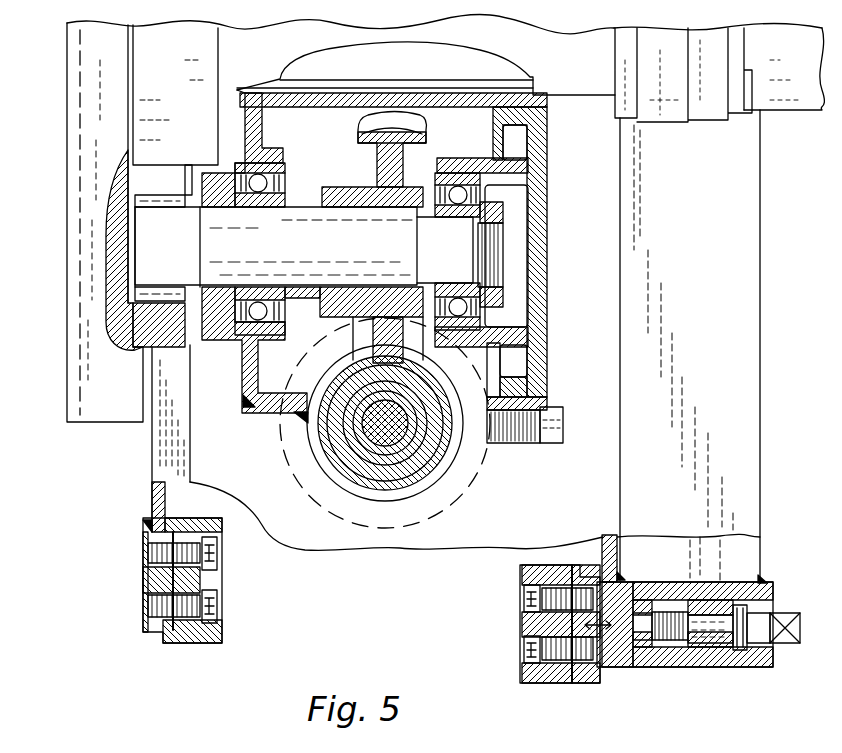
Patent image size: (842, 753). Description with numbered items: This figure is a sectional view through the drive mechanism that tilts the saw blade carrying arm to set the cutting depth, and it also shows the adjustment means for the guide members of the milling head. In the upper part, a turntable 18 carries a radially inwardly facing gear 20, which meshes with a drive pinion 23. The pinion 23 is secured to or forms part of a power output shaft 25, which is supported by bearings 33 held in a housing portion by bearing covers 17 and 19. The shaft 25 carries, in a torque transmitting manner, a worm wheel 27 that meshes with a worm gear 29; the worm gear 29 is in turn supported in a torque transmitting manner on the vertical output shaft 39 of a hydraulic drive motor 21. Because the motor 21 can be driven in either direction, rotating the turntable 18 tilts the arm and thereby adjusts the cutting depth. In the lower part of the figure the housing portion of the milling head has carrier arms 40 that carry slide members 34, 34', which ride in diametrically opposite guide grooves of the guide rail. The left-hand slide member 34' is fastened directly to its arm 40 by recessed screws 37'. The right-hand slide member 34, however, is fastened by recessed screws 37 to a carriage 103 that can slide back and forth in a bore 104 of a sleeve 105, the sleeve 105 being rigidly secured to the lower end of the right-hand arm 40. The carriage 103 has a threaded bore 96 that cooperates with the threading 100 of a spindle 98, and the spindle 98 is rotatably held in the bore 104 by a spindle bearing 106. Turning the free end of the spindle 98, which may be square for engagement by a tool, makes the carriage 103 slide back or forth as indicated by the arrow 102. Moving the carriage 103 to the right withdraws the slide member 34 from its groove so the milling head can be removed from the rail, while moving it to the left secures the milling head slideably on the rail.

The bearing cover 17 is at (243, 390).
The turntable 18 is at (110, 403).
The bearing cover 19 is at (535, 163).
The radially inwardly facing gear 20 is at (157, 296).
The hydraulic drive motor 21 is at (480, 463).
The drive pinion 23 is at (153, 220).
The power output shaft 25 is at (303, 233).
The worm wheel 27 is at (422, 115).
The worm gear 29 is at (355, 437).
The bearings 33 is at (240, 338).
The slide member 34 is at (560, 641).
The slide member 34' is at (182, 600).
The recessed screws 37 is at (529, 624).
The recessed screws 37' is at (217, 580).
The vertical output shaft 39 is at (377, 447).
The carrier arm 40 is at (152, 502).
The threaded bore 96 is at (712, 645).
The spindle 98 is at (780, 645).
The threading 100 is at (660, 642).
The arrow 102 is at (610, 657).
The carriage 103 is at (628, 600).
The bore 104 is at (768, 610).
The sleeve 105 is at (693, 590).
The spindle bearing 106 is at (745, 650).